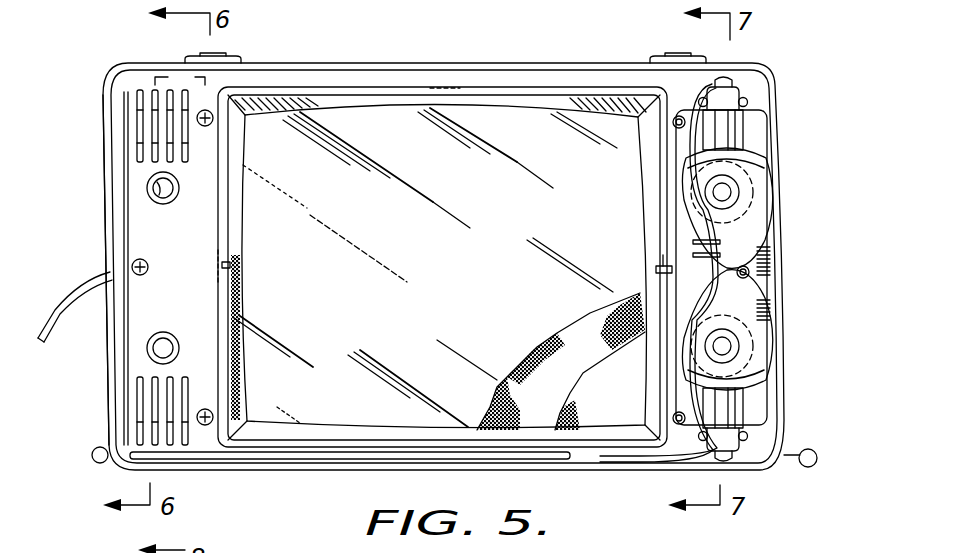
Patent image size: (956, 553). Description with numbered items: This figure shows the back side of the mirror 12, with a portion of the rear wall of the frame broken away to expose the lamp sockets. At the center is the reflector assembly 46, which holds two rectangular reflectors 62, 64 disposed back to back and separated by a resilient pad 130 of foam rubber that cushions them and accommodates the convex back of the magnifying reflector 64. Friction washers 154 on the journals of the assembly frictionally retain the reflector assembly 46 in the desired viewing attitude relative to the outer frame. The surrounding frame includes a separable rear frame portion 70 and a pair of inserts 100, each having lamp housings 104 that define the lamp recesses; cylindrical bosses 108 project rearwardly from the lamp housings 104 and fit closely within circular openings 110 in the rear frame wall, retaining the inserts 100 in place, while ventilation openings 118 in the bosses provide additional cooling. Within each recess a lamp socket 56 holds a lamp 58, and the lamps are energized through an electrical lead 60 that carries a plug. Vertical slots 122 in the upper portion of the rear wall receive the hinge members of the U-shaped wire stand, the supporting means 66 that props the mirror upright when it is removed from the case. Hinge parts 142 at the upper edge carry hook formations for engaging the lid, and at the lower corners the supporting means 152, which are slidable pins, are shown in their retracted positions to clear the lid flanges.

The mirror 12 is at (502, 48).
The central reflector assembly 46 is at (375, 115).
The lamp socket 56 is at (735, 132).
The lamp 58 is at (765, 193).
The electrical lead 60 is at (65, 310).
The reflector 62 is at (330, 405).
The magnifying reflector 64 is at (605, 397).
The supporting means 66 is at (205, 462).
The rear frame portion 70 is at (108, 243).
The insert 100 is at (778, 282).
The lamp housing 104 is at (740, 230).
The cylindrical boss 108 is at (712, 183).
The circular opening 110 is at (164, 202).
The ventilation opening 118 is at (157, 185).
The vertical slot 122 is at (152, 414).
The resilient pad 130 is at (568, 330).
The hinge part 142 is at (222, 50).
The supporting means 152 is at (108, 463).
The friction washer 154 is at (232, 265).